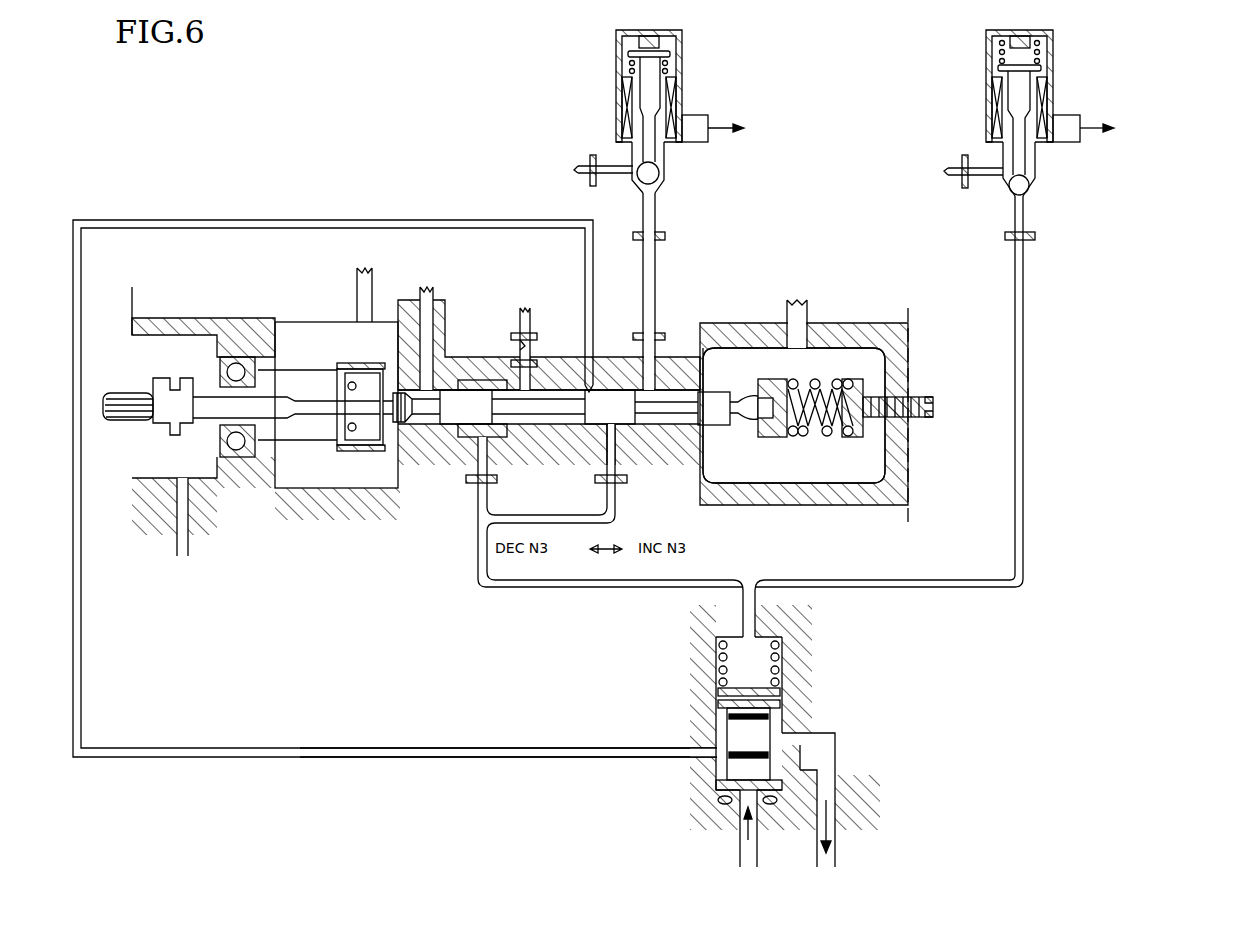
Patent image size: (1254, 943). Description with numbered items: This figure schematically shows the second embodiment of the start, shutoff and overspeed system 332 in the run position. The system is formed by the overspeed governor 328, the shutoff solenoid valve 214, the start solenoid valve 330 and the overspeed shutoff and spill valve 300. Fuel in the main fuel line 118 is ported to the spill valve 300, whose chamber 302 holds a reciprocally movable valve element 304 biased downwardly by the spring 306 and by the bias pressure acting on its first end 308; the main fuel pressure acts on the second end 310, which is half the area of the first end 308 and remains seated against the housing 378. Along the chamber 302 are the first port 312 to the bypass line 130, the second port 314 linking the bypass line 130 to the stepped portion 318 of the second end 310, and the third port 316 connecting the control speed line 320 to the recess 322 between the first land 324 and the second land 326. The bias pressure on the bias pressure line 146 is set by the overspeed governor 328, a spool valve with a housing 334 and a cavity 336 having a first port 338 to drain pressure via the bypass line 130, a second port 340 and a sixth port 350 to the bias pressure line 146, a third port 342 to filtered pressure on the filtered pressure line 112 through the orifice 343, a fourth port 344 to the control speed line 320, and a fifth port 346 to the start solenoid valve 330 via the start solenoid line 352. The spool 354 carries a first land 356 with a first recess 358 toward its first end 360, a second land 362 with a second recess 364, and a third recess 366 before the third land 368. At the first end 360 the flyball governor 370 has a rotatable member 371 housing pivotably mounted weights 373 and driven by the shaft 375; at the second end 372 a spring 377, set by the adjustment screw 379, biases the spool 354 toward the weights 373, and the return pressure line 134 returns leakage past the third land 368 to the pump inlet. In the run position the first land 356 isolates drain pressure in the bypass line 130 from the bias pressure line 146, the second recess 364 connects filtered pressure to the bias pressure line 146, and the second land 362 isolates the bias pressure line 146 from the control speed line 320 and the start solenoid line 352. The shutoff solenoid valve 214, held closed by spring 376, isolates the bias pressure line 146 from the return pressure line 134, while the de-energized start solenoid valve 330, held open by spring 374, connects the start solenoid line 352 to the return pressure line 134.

The start solenoid valve 330 is at (689, 105).
The spring 374 is at (672, 58).
The PDF line 134 is at (610, 165).
The start solenoid line 352 is at (658, 235).
The shutoff solenoid valve 214 is at (1068, 108).
The spring 376 is at (1040, 58).
The start, shutoff and overspeed system 332 is at (360, 167).
The overspeed governor 328 is at (258, 293).
The bypass line 130 is at (432, 319).
The filtered pressure line 112 is at (546, 298).
The orifice 343 is at (520, 346).
The cavity 336 is at (533, 352).
The third port 342 is at (519, 373).
The fourth port 344 is at (543, 390).
The fifth port 346 is at (633, 390).
The pivotably mounted weights 373 is at (348, 378).
The rotatable member 371 is at (332, 392).
The flyball governor 370 is at (297, 405).
The shaft 375 is at (125, 422).
The first recess 358 is at (398, 448).
The first port 338 is at (481, 391).
The first land 356 is at (466, 407).
The second land 362 is at (610, 407).
The second end 372 is at (741, 395).
The adjustment screw 379 is at (935, 408).
The spring 377 is at (798, 441).
The second port 340 is at (469, 437).
The second recess 364 is at (513, 437).
The housing 334 is at (546, 430).
The sixth port 350 is at (544, 408).
The spool 354 is at (559, 436).
The first end 360 is at (426, 440).
The third recess 366 is at (598, 426).
The third land 368 is at (655, 414).
The bias pressure line 146 is at (756, 620).
The overspeed shutoff and spill valve 300 is at (761, 748).
The spring 306 is at (718, 658).
The valve element 304 is at (745, 700).
The chamber 302 is at (722, 718).
The first end 308 is at (756, 685).
The stepped portion 318 is at (808, 718).
The second port 314 is at (773, 734).
The second land 326 is at (717, 748).
The first port 312 is at (798, 763).
The third port 316 is at (728, 758).
The recess 322 is at (727, 777).
The second end 310 is at (738, 796).
The first land 324 is at (755, 816).
The housing 378 is at (775, 797).
The main fuel line 118 is at (745, 838).
The control speed line 320 is at (617, 748).